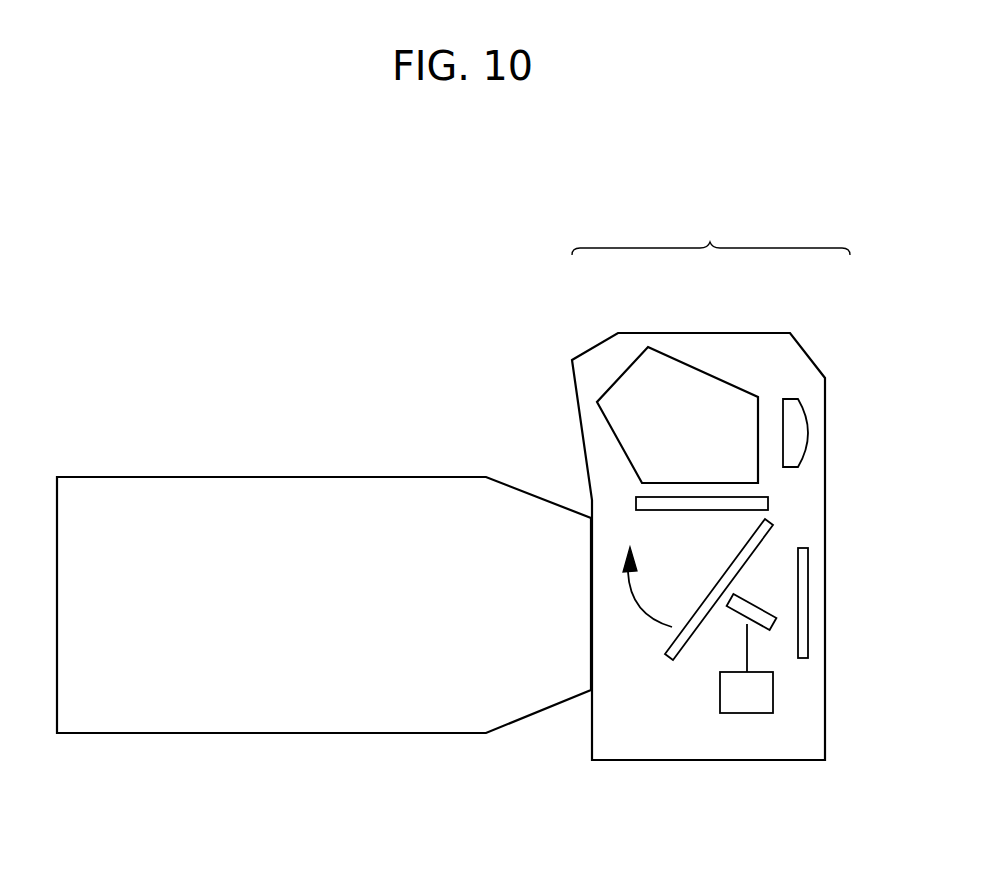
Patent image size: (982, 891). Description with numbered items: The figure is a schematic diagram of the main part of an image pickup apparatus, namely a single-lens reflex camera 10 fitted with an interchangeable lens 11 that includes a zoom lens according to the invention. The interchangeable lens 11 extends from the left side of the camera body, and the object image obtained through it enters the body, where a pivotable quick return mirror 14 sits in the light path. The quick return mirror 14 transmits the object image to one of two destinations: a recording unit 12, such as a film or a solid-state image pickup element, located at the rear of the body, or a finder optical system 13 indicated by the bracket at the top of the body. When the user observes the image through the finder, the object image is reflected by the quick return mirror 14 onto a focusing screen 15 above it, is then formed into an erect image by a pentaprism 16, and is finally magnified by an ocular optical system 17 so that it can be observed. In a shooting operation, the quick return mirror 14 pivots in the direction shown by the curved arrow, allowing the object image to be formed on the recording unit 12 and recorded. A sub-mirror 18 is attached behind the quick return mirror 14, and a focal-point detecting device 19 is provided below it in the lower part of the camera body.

The single-lens reflex camera 10 is at (800, 745).
The interchangeable lens 11 is at (295, 492).
The recording unit 12 is at (805, 588).
The finder optical system 13 is at (711, 232).
The quick return mirror 14 is at (672, 660).
The focusing screen 15 is at (656, 497).
The pentaprism 16 is at (682, 373).
The ocular optical system 17 is at (793, 403).
The sub-mirror 18 is at (737, 598).
The focal-point detecting device 19 is at (768, 702).